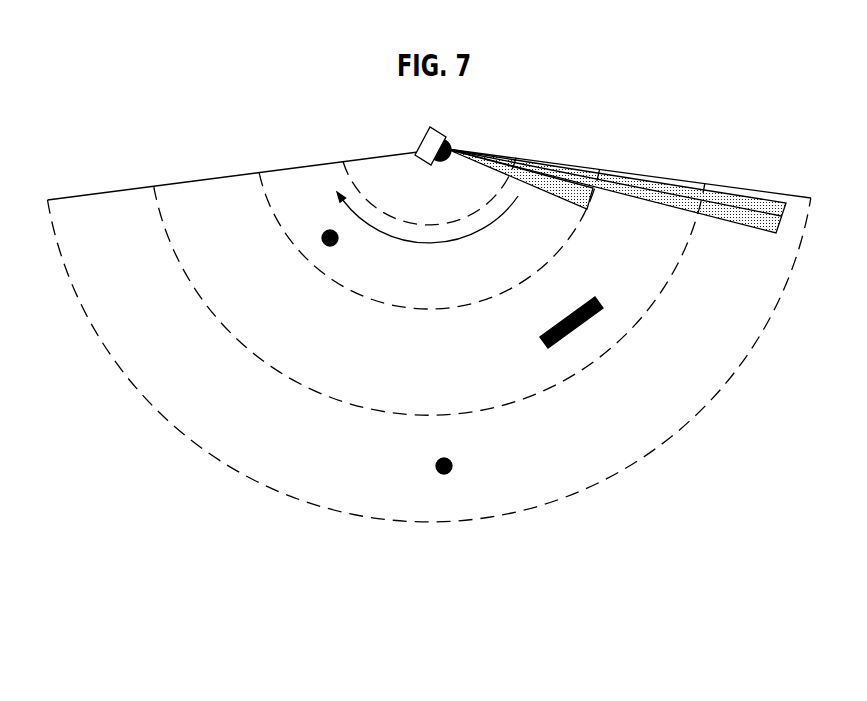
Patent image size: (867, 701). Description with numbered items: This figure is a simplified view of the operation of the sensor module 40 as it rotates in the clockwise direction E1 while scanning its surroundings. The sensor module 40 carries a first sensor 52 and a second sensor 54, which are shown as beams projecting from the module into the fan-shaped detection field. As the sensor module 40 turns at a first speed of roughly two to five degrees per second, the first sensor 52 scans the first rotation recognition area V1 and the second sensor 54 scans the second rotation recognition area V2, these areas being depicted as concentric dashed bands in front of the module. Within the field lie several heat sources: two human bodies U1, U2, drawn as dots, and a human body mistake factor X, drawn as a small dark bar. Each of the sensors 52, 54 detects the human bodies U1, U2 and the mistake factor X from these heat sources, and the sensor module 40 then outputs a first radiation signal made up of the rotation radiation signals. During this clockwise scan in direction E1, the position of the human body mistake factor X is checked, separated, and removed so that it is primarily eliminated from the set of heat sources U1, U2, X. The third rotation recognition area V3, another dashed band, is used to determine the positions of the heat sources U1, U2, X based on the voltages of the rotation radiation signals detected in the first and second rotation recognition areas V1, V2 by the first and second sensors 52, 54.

The sensor module 40 is at (450, 125).
The first sensor 52 is at (557, 183).
The second sensor 54 is at (682, 193).
The first rotation recognition area V1 is at (309, 189).
The second rotation recognition area V2 is at (117, 220).
The third rotation recognition area V3 is at (226, 205).
The clockwise direction E1 is at (427, 230).
The human body U1 is at (441, 484).
The human body U2 is at (330, 257).
The human body mistake factor X is at (594, 329).